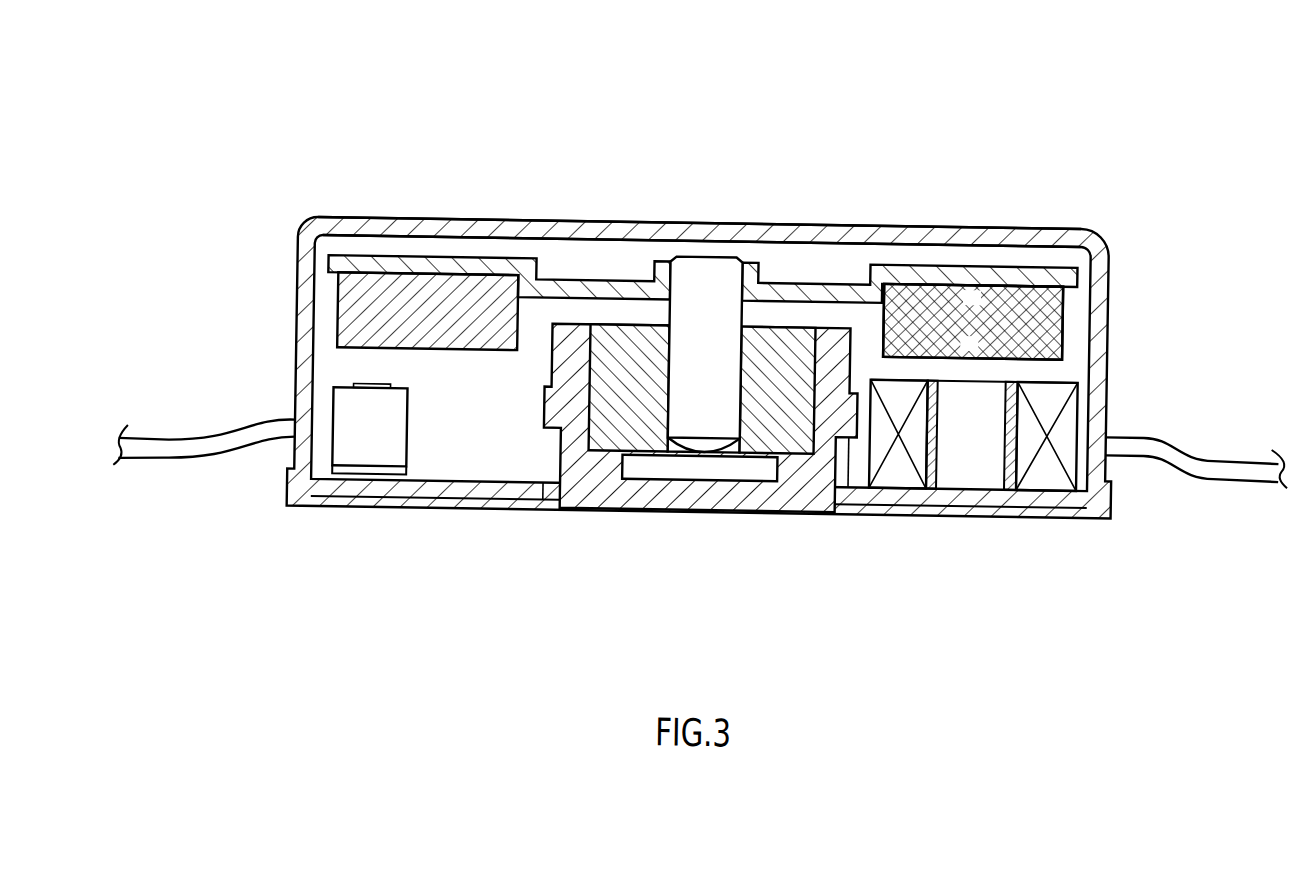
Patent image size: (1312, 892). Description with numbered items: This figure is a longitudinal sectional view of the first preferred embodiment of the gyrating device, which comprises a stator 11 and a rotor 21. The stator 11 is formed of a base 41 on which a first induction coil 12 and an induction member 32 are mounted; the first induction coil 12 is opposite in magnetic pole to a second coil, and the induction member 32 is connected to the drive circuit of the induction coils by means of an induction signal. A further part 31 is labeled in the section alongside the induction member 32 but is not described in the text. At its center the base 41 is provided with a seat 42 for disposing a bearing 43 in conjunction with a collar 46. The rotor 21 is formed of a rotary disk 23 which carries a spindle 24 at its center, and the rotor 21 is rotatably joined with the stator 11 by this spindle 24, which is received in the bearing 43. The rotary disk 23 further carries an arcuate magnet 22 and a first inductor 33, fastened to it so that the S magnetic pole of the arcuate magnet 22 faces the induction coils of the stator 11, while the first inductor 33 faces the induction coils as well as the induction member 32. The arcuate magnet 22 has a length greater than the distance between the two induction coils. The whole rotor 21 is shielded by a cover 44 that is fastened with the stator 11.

The stator 11 is at (1086, 384).
The first induction coil 12 is at (1061, 437).
The rotor 21 is at (1077, 287).
The arcuate magnet 22 is at (1062, 321).
The rotary disk 23 is at (911, 274).
The spindle 24 is at (704, 272).
The circuit board 31 is at (322, 352).
The induction member 32 is at (362, 383).
The first inductor 33 is at (422, 292).
The base 41 is at (937, 493).
The seat 42 is at (855, 465).
The bearing 43 is at (763, 432).
The cover 44 is at (573, 230).
The collar 46 is at (828, 441).